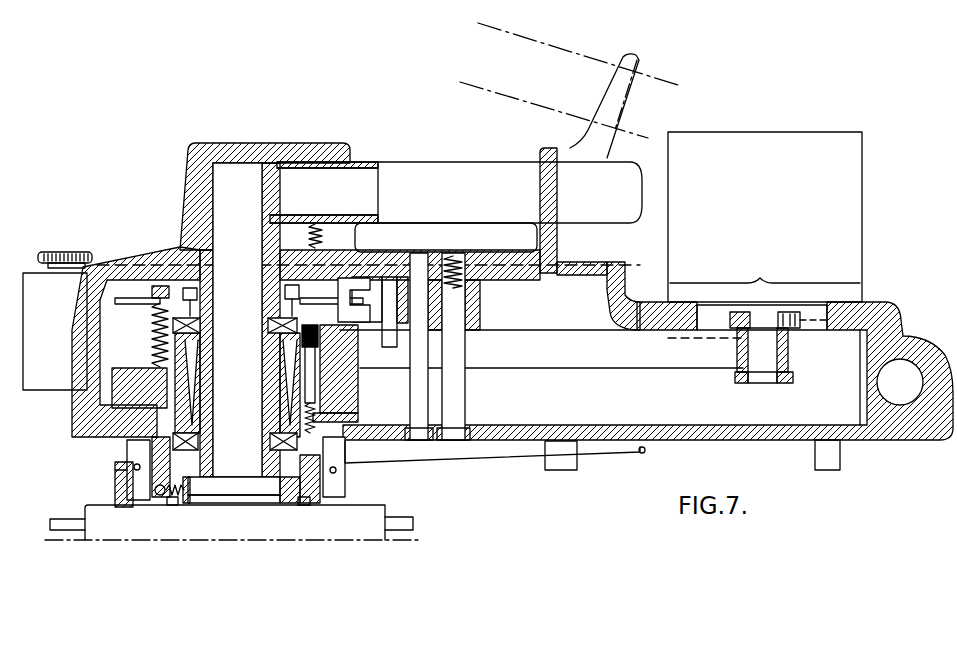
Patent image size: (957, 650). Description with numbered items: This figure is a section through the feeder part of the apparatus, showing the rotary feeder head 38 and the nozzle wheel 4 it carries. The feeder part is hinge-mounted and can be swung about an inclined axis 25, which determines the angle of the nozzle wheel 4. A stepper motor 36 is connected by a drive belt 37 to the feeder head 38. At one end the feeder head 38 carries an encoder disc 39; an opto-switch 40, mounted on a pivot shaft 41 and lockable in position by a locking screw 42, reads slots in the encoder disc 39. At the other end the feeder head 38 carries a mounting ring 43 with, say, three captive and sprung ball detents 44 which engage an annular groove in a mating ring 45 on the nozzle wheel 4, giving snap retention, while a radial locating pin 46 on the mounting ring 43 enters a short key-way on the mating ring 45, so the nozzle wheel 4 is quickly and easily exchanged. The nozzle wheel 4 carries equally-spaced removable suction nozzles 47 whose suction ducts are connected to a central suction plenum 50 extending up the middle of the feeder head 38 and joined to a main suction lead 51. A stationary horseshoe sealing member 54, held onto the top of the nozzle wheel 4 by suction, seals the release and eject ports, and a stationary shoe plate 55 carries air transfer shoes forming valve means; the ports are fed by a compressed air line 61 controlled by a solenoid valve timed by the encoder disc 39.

The nozzle wheel 4 is at (238, 527).
The axis 25 is at (905, 383).
The stepper motor 36 is at (848, 178).
The drive belt 37 is at (566, 352).
The feeder head 38 is at (130, 390).
The encoder disc 39 is at (128, 298).
The opto-switch 40 is at (357, 287).
The pivot shaft 41 is at (410, 403).
The locking screw 42 is at (455, 403).
The mounting ring 43 is at (185, 508).
The ball detents 44 is at (162, 507).
The mating ring 45 is at (172, 507).
The locating pin 46 is at (285, 507).
The suction nozzles 47 is at (415, 523).
The suction plenum 50 is at (230, 497).
The main suction lead 51 is at (500, 85).
The sealing member 54 is at (115, 493).
The shoe plate 55 is at (78, 252).
The compressed air line 61 is at (509, 456).